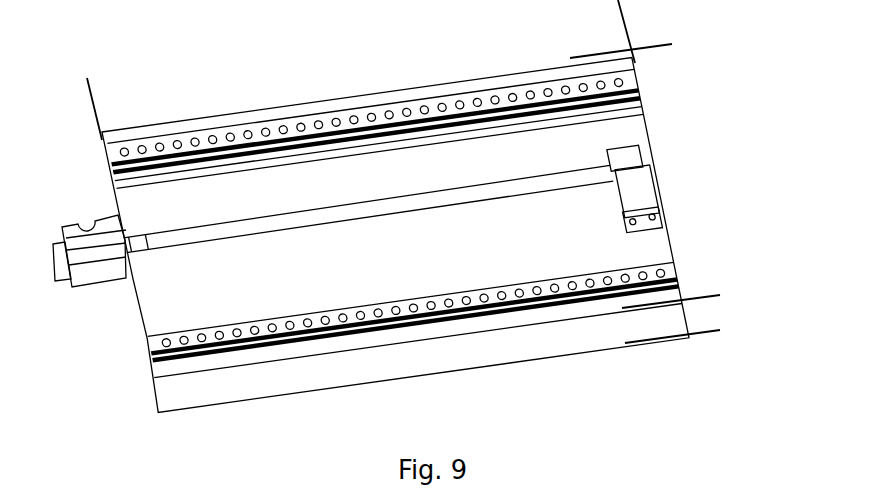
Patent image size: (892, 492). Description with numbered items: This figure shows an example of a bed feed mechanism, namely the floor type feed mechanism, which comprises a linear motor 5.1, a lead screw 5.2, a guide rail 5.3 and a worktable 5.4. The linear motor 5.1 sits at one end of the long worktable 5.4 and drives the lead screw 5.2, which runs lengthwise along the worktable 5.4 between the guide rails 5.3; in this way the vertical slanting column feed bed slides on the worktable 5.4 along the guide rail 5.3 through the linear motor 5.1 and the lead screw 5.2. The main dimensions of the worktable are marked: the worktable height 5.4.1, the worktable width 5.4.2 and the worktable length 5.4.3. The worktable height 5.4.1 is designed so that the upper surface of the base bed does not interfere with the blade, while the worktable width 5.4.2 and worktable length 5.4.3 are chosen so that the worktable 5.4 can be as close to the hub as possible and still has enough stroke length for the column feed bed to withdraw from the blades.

The linear motor 5.1 is at (102, 232).
The lead screw 5.2 is at (185, 235).
The guide rail 5.3 is at (347, 123).
The worktable 5.4 is at (183, 123).
The worktable height 5.4.1 is at (712, 331).
The worktable width 5.4.2 is at (707, 297).
The worktable length 5.4.3 is at (93, 102).